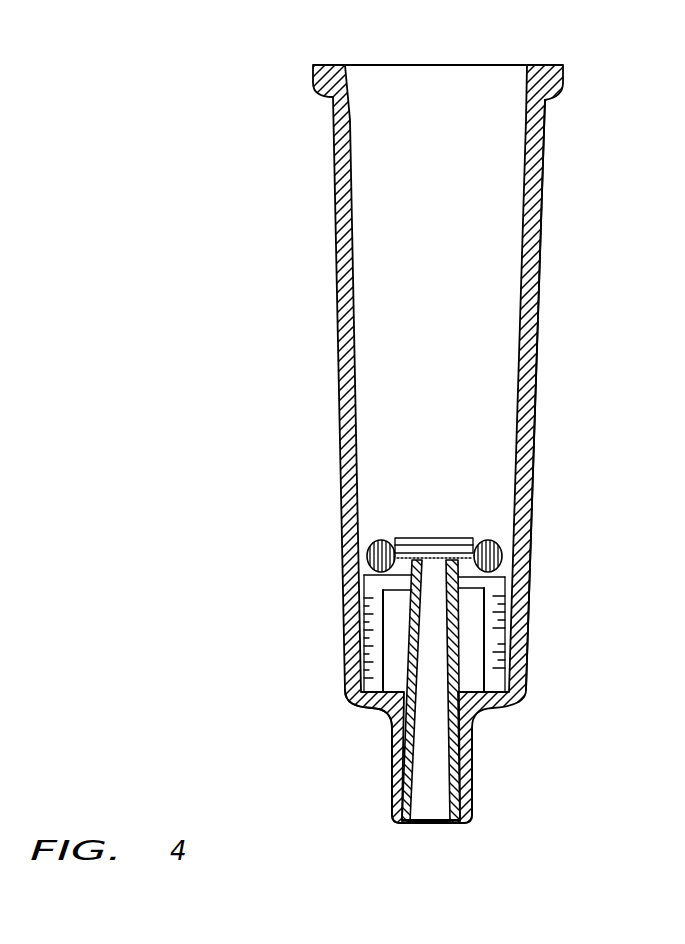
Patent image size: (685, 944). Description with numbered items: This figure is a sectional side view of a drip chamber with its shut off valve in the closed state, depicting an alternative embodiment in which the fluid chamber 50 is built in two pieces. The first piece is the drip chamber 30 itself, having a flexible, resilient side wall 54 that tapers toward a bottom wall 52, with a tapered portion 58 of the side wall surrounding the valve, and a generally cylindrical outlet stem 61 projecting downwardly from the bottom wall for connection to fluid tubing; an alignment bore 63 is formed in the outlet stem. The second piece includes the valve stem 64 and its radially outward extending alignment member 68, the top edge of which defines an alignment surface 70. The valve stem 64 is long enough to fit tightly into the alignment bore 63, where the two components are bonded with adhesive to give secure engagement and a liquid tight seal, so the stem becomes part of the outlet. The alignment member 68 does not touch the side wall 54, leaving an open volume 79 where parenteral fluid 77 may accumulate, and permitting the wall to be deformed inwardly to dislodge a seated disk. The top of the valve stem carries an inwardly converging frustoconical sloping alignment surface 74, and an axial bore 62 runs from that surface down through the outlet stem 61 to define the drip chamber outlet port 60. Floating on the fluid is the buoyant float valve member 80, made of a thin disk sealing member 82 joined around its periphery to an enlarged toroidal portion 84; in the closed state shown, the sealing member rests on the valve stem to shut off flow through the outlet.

The drip chamber 30 is at (552, 141).
The fluid chamber 50 is at (276, 312).
The side wall 54 is at (533, 405).
The tapered portion 58 is at (278, 458).
The float valve member 80 is at (364, 523).
The sealing member 82 is at (427, 558).
The enlarged portion 84 is at (490, 538).
The alignment surface 70 is at (368, 566).
The frustoconical sloping alignment surface 74 is at (503, 556).
The parenteral fluid 77 is at (520, 600).
The valve stem 64 is at (383, 622).
The alignment member 68 is at (494, 636).
The open volume 79 is at (368, 662).
The bottom wall 52 is at (365, 713).
The outlet stem 61 is at (480, 738).
The alignment bore 63 is at (425, 752).
The drip chamber outlet port 60 is at (409, 832).
The axial bore 62 is at (447, 805).